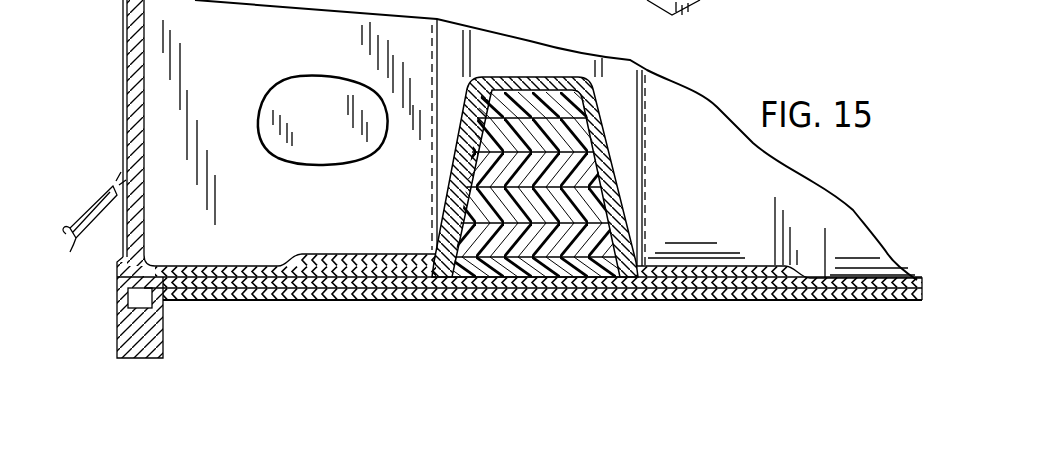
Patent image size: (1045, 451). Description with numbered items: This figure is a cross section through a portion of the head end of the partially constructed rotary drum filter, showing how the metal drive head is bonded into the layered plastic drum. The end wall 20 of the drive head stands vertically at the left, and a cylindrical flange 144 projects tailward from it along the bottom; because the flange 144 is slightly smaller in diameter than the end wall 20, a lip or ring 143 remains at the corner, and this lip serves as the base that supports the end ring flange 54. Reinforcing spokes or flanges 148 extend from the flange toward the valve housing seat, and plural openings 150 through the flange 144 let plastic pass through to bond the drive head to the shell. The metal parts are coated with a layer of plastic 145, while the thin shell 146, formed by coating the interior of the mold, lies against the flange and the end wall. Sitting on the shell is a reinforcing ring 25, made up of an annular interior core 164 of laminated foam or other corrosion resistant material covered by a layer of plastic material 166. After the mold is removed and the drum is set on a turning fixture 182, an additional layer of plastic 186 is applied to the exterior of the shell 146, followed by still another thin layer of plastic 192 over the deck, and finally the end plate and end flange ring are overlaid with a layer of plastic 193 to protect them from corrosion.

The end wall 20 is at (128, 30).
The reinforcing ring 25 is at (628, 171).
The end ring flange 54 is at (146, 353).
The lip or ring 143 is at (126, 312).
The cylindrical flange 144 is at (225, 284).
The layer of plastic 145 is at (144, 210).
The shell 146 is at (247, 256).
The reinforcing spokes or flanges 148 is at (340, 133).
The openings 150 is at (313, 290).
The annular interior core 164 is at (570, 143).
The layer of plastic material 166 is at (622, 190).
The turning fixture 182 is at (735, 0).
The additional layer of plastic 186 is at (900, 302).
The layer of plastic 192 is at (780, 302).
The layer of plastic 193 is at (118, 172).